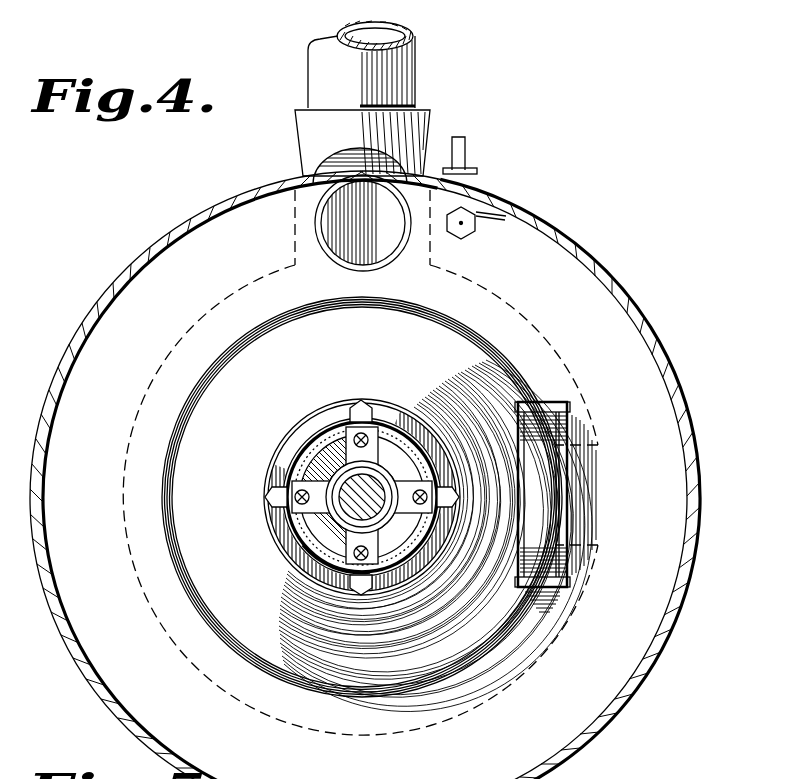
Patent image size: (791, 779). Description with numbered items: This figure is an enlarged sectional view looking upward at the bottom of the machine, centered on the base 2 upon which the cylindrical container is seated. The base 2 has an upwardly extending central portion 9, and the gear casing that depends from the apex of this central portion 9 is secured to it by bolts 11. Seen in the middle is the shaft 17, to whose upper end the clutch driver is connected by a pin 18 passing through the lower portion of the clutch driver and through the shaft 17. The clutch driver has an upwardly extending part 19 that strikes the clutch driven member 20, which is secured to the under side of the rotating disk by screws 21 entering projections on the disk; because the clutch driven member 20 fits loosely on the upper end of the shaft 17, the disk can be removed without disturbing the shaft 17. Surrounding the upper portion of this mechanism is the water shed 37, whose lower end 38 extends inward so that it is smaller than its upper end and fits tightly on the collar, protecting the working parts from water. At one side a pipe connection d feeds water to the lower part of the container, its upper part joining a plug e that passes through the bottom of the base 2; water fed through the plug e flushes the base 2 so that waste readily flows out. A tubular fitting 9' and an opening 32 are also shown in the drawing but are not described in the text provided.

The base 2 is at (57, 336).
The upwardly extending central portion 9 is at (362, 497).
The outlet pipe 9' is at (380, 64).
The bolts 11 is at (268, 500).
The shaft 17 is at (337, 455).
The pin 18 is at (293, 540).
The upwardly extending part 19 is at (307, 440).
The clutch driven member 20 is at (313, 503).
The screws 21 is at (297, 490).
The opening 32 is at (420, 222).
The water shed 37 is at (288, 455).
The lower end 38 is at (313, 555).
The pipe connection d is at (467, 147).
The plug e is at (476, 232).